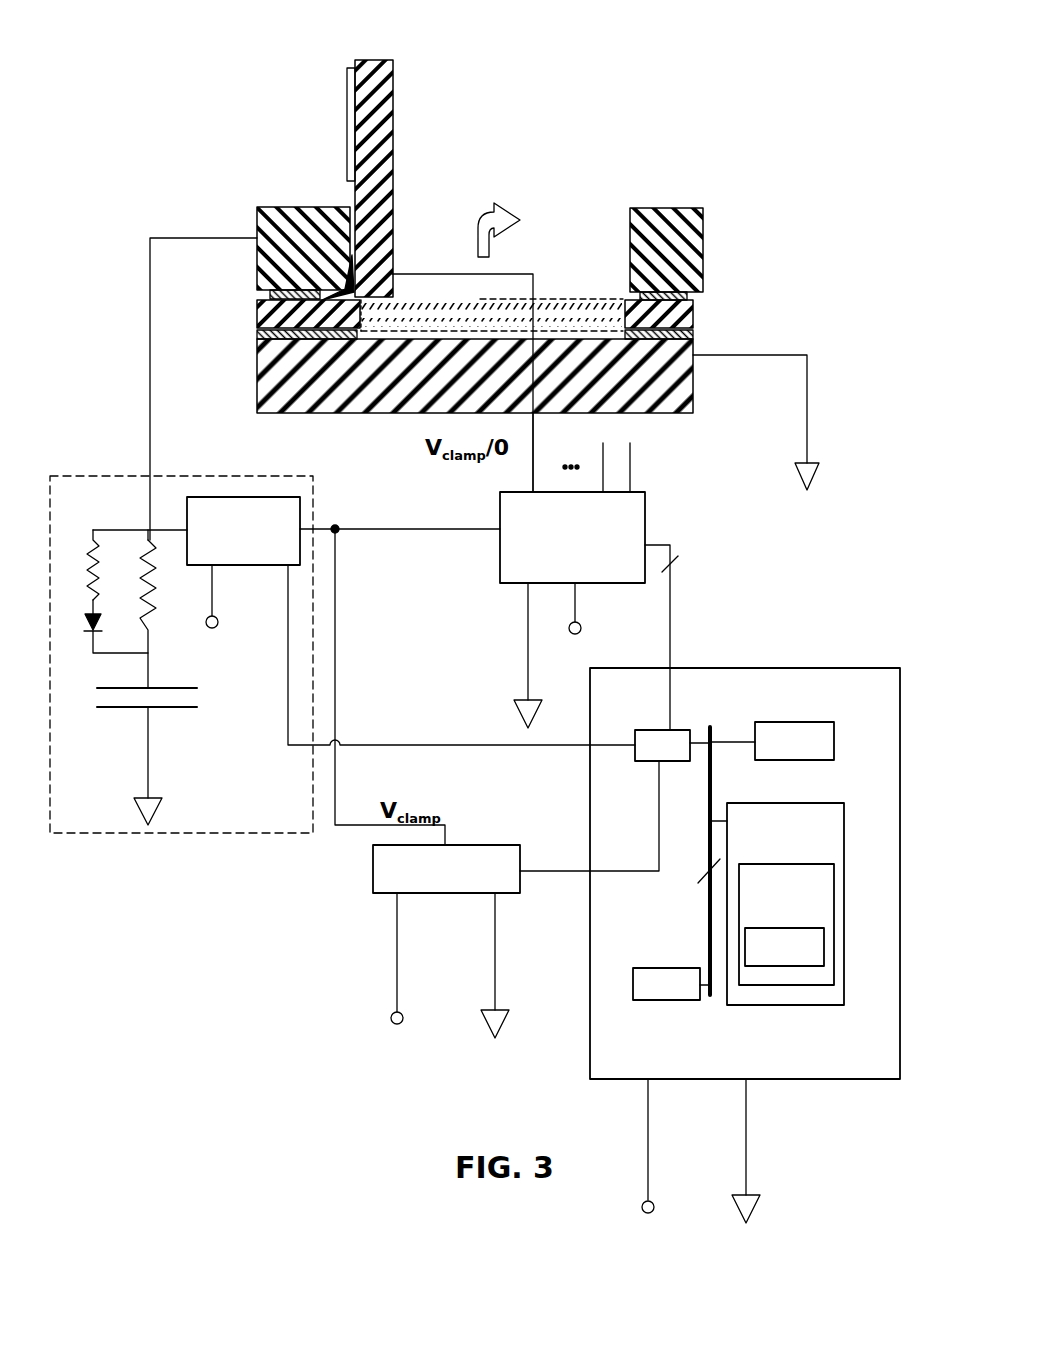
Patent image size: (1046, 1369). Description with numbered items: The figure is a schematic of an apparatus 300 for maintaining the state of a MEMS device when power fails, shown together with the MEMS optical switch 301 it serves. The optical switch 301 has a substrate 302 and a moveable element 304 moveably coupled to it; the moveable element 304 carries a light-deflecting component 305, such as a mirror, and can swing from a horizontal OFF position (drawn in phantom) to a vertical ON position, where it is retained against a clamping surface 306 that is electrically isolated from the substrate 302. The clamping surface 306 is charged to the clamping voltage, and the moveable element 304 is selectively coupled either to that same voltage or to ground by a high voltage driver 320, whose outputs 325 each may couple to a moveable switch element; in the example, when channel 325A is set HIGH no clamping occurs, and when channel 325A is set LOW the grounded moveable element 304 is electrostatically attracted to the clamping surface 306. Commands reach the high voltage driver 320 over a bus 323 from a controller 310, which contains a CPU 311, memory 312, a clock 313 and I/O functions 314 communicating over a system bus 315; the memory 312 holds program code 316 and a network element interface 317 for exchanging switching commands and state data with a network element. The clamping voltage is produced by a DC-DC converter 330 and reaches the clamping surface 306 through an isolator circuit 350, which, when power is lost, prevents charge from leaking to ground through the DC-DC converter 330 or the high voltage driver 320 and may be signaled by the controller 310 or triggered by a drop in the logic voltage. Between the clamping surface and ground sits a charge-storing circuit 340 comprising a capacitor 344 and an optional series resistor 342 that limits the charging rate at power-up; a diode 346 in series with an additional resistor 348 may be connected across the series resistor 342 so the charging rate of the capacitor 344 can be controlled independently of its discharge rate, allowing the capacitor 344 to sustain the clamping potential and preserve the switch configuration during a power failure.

The apparatus 300 is at (115, 476).
The MEMS optical switch 301 is at (622, 60).
The substrate 302 is at (257, 364).
The moveable element 304 is at (393, 62).
The light-deflecting component 305 is at (348, 80).
The clamping surface 306 is at (318, 207).
The controller 310 is at (752, 668).
The CPU 311 is at (758, 722).
The memory 312 is at (766, 803).
The clock 313 is at (633, 972).
The I/O functions 314 is at (648, 731).
The system bus 315 is at (708, 930).
The program code 316 is at (834, 898).
The network element interface 317 is at (824, 947).
The high voltage driver 320 is at (500, 565).
The bus 323 is at (655, 545).
The output channels 325 is at (662, 470).
The channel 325A is at (533, 468).
The DC-DC converter 330 is at (373, 866).
The charge-storing circuit 340 is at (226, 762).
The series resistor 342 is at (160, 605).
The capacitor 344 is at (165, 707).
The diode 346 is at (90, 632).
The additional resistor 348 is at (90, 580).
The isolator circuit 350 is at (235, 497).